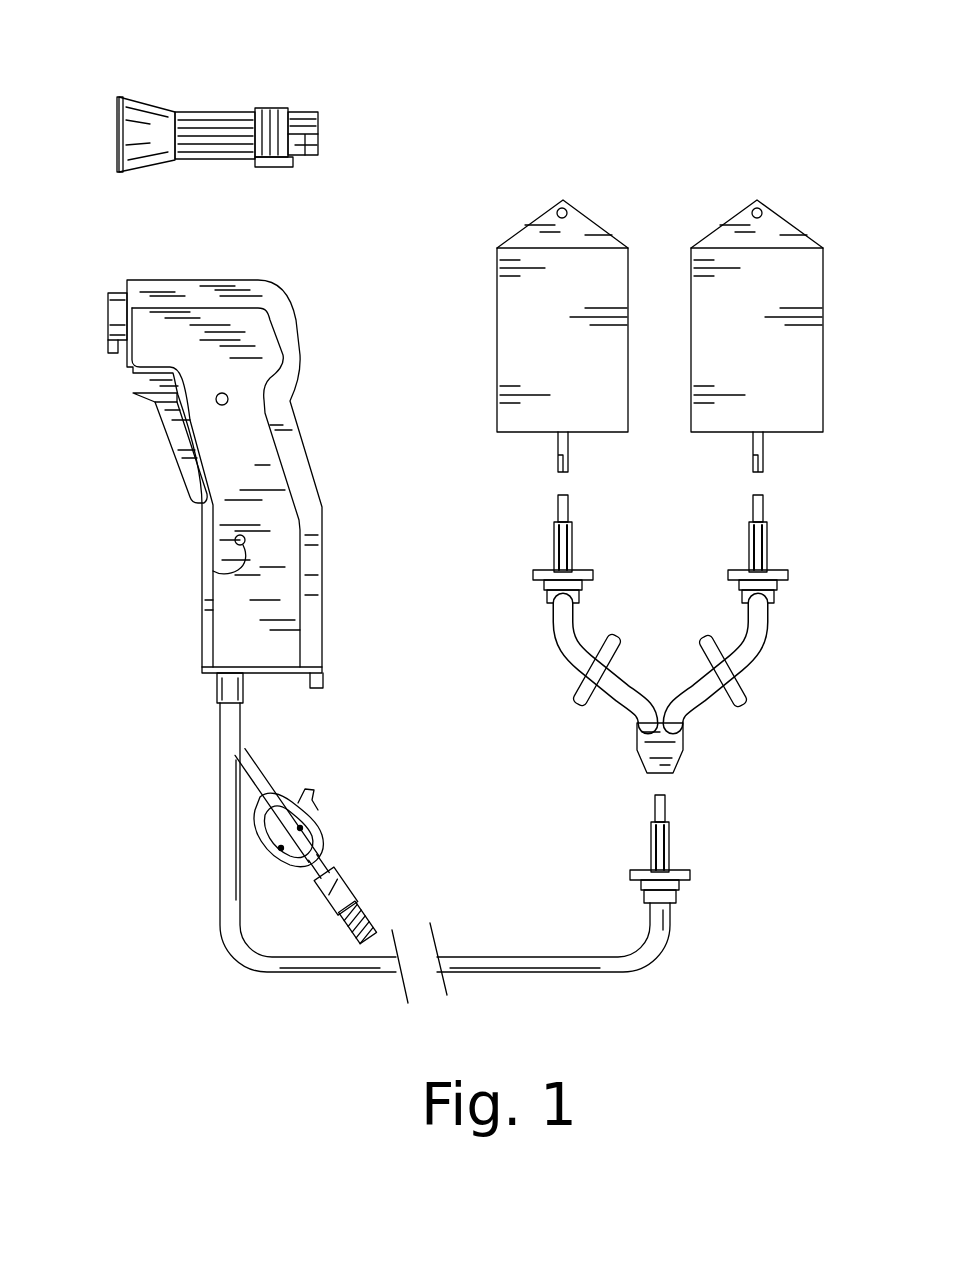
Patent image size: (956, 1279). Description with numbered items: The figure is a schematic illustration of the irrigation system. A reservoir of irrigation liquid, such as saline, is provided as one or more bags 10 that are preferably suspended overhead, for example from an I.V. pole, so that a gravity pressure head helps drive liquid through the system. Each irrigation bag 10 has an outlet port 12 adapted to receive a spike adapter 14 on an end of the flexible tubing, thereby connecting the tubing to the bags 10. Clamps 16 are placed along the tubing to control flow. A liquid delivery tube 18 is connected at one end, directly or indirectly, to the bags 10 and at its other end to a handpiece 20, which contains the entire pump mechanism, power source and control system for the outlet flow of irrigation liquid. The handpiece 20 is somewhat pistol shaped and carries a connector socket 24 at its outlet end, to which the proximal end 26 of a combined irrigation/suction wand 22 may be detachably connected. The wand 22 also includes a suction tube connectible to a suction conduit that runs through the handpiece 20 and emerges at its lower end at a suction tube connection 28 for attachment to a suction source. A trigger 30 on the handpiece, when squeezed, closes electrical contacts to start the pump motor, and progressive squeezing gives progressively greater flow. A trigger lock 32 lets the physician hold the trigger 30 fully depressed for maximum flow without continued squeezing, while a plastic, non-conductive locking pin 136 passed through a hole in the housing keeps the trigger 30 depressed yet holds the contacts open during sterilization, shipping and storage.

The irrigation bag 10 is at (727, 253).
The outlet port 12 is at (567, 455).
The spike adapter 14 is at (555, 545).
The clamp 16 is at (580, 705).
The liquid delivery tube 18 is at (600, 978).
The handpiece 20 is at (316, 425).
The combined irrigation/suction wand 22 is at (255, 80).
The connector socket 24 is at (110, 293).
The proximal end 26 is at (336, 125).
The suction tube connection 28 is at (358, 910).
The trigger 30 is at (180, 453).
The trigger lock 32 is at (228, 399).
The locking pin 136 is at (215, 573).